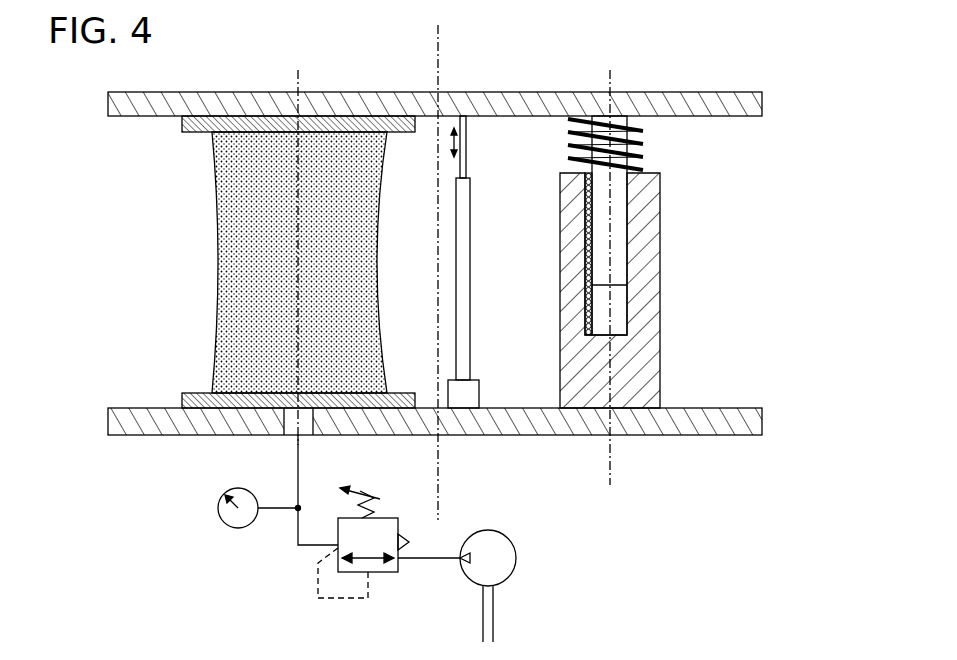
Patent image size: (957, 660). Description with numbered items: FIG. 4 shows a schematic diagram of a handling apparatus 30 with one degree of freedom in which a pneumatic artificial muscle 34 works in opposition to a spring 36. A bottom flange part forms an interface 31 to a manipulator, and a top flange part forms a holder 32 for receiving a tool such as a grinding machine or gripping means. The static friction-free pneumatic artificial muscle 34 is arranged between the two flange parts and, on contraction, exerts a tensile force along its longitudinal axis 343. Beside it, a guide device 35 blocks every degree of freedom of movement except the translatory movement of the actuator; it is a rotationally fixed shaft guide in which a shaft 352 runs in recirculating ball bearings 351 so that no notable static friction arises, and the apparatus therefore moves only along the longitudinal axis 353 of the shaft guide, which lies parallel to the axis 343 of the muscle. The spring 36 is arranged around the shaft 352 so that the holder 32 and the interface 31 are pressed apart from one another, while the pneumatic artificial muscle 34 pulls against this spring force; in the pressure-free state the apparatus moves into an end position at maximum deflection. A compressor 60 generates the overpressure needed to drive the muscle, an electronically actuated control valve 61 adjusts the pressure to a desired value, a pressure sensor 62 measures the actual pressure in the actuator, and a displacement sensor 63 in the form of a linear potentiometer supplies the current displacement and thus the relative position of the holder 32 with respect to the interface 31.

The handling apparatus 30 is at (714, 56).
The interface to a manipulator 31 is at (680, 436).
The holder for a tool 32 is at (560, 92).
The pneumatic artificial muscle 34 is at (217, 228).
The longitudinal axis of the linear actuator 343 is at (298, 78).
The guide device 35 is at (640, 262).
The recirculating ball bearings 351 is at (585, 223).
The shaft 352 is at (619, 193).
The longitudinal axis of the shaft guide 353 is at (610, 475).
The spring 36 is at (645, 150).
The compressor 60 is at (516, 560).
The control valve 61 is at (398, 520).
The pressure sensor 62 is at (236, 528).
The displacement sensor 63 is at (463, 370).